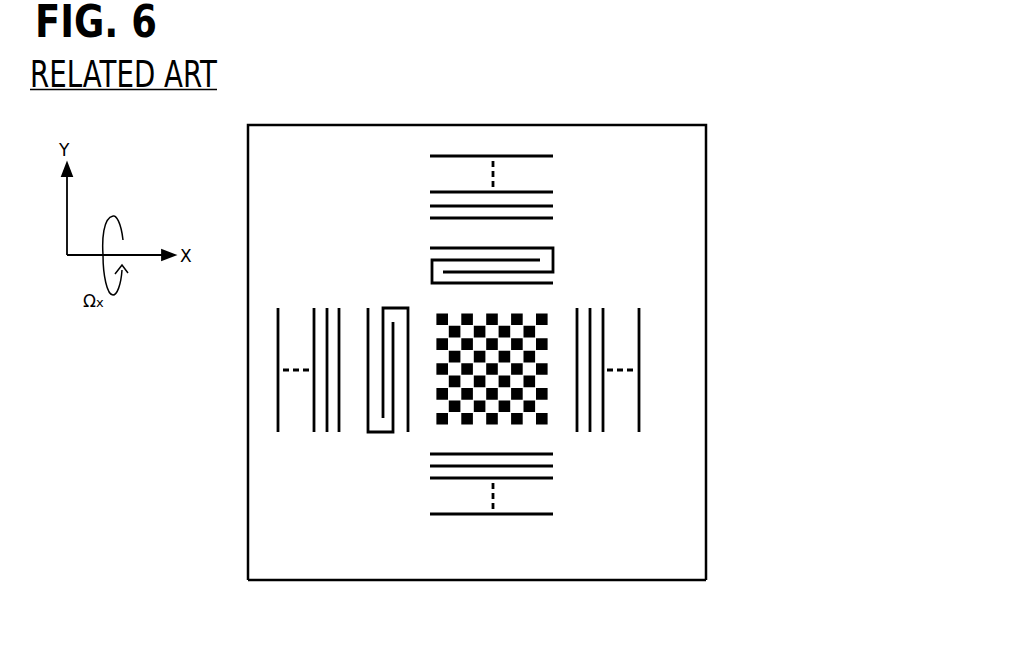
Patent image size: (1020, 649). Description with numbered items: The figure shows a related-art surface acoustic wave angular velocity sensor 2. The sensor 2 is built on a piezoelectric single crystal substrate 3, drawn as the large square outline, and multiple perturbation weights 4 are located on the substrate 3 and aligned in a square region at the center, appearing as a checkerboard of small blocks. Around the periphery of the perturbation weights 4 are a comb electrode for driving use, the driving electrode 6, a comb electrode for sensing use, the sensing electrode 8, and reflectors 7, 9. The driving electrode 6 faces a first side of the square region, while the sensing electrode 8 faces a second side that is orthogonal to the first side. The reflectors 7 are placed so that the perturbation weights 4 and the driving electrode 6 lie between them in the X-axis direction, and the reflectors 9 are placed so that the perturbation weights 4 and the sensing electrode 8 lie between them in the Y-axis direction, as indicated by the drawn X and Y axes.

The surface acoustic wave angular velocity sensor 2 is at (612, 125).
The piezoelectric single crystal substrate 3 is at (617, 572).
The perturbation weights 4 is at (437, 312).
The driving electrode 6 is at (382, 442).
The reflectors 7 is at (314, 442).
The sensing electrode 8 is at (568, 258).
The reflectors 9 is at (568, 189).